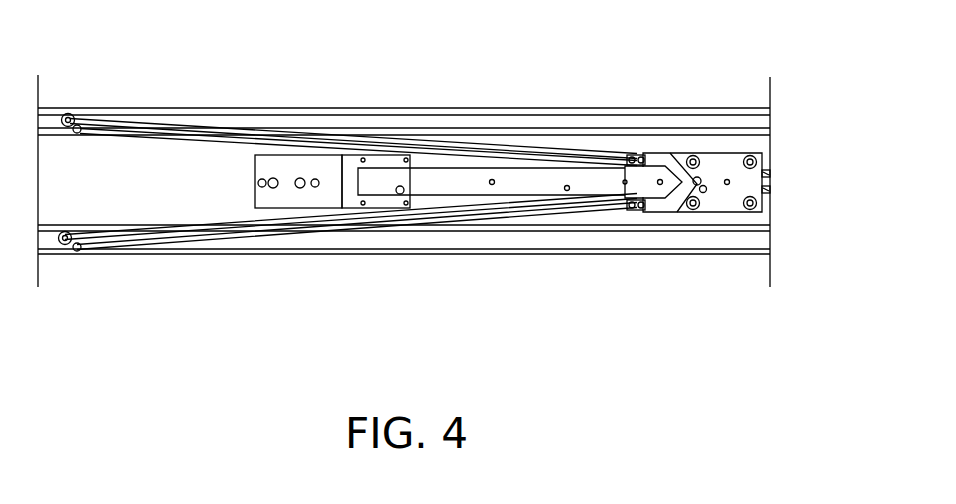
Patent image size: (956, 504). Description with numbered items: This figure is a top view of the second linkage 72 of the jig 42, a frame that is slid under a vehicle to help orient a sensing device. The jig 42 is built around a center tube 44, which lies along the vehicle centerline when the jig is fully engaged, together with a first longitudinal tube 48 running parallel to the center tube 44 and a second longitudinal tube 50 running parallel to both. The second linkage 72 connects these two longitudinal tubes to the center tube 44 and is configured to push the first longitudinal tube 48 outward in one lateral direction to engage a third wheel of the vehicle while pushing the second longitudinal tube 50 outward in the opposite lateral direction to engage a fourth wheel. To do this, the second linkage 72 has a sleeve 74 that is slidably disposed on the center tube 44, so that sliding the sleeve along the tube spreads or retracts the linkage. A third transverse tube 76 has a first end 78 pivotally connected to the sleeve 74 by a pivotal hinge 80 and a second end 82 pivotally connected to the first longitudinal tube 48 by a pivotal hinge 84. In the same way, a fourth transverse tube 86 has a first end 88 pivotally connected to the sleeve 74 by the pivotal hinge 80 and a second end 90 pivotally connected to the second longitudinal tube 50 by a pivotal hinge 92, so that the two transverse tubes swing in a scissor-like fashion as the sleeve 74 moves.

The jig 42 is at (695, 101).
The center tube 44 is at (774, 183).
The first longitudinal tube 48 is at (378, 127).
The second longitudinal tube 50 is at (707, 238).
The second linkage 72 is at (505, 132).
The sleeve 74 is at (722, 163).
The third transverse tube 76 is at (263, 137).
The first end 78 is at (667, 155).
The pivotal hinge 80 is at (701, 178).
The second end 82 is at (95, 123).
The pivotal hinge 84 is at (69, 116).
The fourth transverse tube 86 is at (457, 215).
The first end 88 is at (656, 200).
The second end 90 is at (110, 240).
The pivotal hinge 92 is at (67, 247).